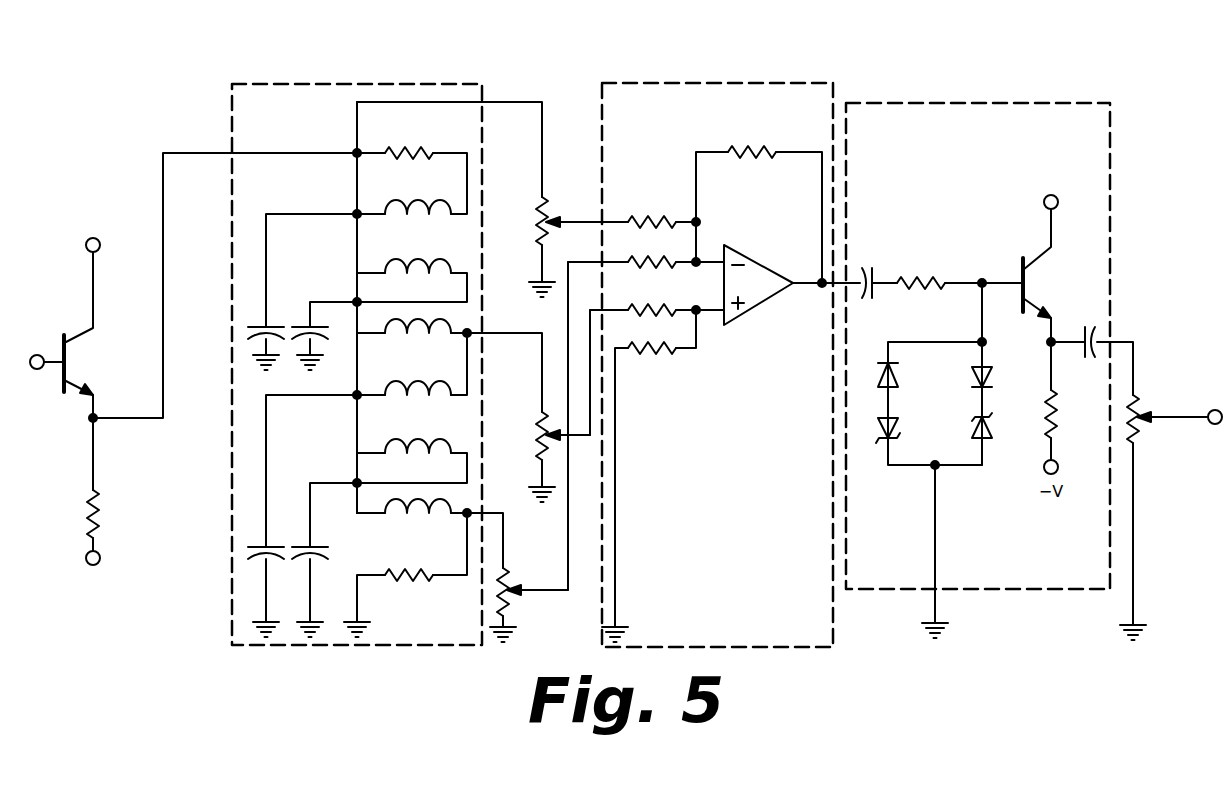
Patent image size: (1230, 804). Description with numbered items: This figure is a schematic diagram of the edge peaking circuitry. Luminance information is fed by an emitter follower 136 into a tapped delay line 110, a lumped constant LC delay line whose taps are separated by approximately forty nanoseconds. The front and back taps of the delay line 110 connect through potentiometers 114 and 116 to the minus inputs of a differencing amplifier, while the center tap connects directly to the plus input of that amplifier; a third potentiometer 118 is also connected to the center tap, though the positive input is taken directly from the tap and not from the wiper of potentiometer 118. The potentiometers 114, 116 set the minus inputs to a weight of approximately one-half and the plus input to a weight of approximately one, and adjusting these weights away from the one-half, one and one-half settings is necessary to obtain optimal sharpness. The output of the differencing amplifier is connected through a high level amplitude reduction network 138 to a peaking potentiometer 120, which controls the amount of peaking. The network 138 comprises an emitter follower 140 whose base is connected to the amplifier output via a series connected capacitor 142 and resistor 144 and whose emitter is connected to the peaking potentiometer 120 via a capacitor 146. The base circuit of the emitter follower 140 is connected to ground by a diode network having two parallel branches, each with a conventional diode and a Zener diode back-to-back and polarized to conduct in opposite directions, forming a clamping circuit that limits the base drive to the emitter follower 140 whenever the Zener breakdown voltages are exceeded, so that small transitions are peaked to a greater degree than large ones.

The tapped delay line 110 is at (440, 88).
The potentiometer 114 is at (547, 208).
The potentiometer 116 is at (510, 589).
The third potentiometer 118 is at (540, 430).
The peaking potentiometer 120 is at (1141, 408).
The emitter follower 136 is at (73, 352).
The high level amplitude reduction network 138 is at (893, 583).
The emitter follower 140 is at (1036, 290).
The capacitor 142 is at (878, 268).
The resistor 144 is at (932, 276).
The capacitor 146 is at (1100, 336).